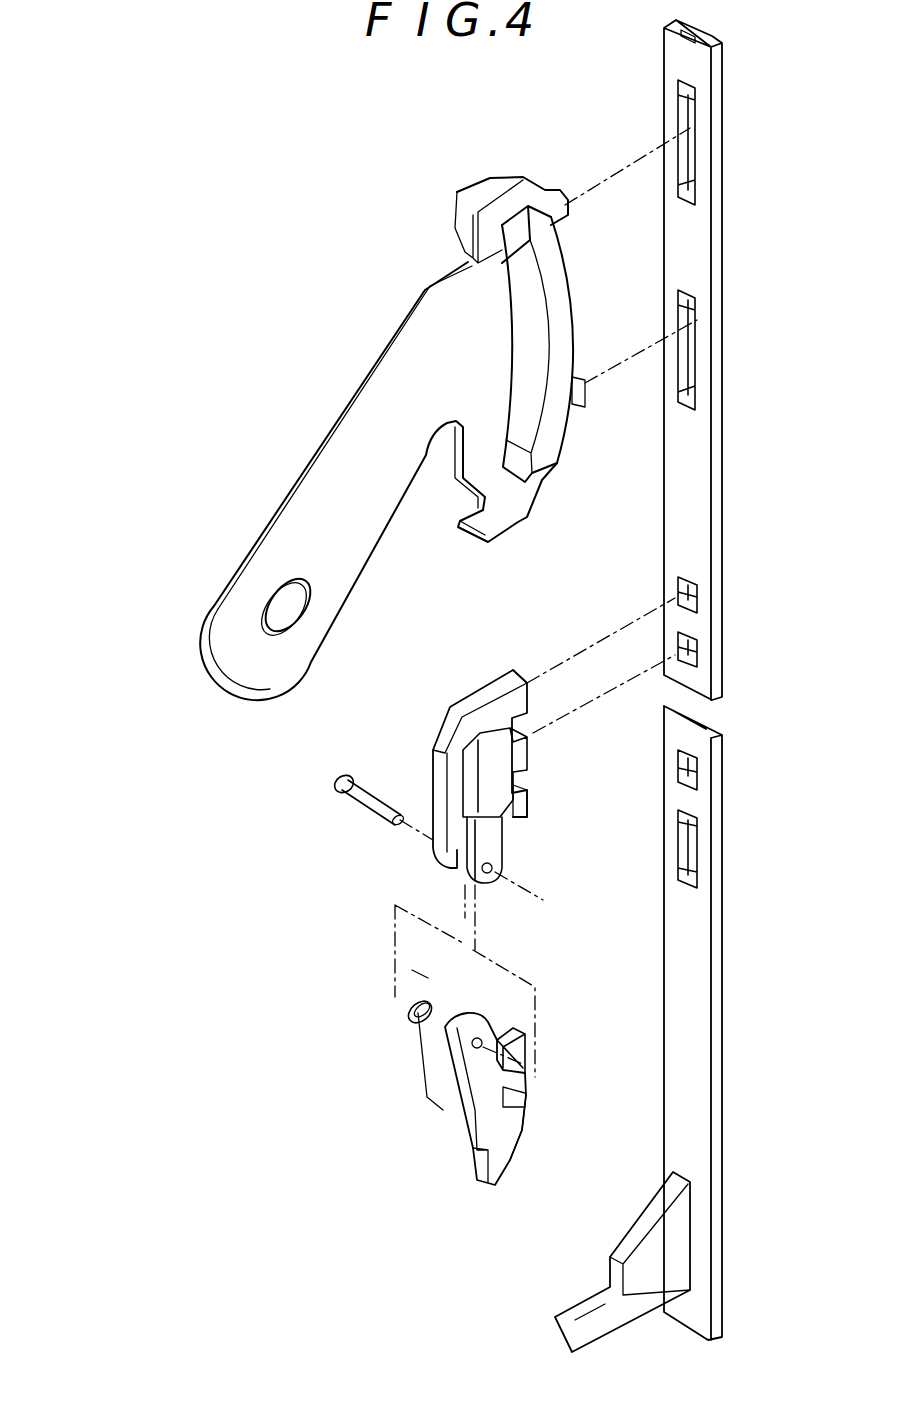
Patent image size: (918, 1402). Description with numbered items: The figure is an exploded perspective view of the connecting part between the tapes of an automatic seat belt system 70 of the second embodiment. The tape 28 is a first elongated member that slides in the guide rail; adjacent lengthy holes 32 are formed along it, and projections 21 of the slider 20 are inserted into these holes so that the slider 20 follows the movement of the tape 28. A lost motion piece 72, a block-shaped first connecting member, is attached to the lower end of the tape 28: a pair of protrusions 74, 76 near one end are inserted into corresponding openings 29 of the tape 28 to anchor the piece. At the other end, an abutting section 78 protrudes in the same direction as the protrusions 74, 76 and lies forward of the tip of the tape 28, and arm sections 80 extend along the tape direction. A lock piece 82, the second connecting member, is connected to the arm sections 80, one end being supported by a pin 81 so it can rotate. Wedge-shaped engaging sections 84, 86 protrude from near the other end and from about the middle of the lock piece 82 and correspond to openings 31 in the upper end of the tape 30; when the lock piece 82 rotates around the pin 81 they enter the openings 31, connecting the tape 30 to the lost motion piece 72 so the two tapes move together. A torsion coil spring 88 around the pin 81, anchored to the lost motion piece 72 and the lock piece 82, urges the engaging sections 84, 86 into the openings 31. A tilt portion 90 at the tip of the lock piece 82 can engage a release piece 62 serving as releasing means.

The slider 20 is at (390, 334).
The projections 21 is at (562, 190).
The tape 28 is at (722, 490).
The openings 29 is at (697, 597).
The tape 30 is at (722, 1070).
The openings 31 is at (697, 770).
The lengthy holes 32 is at (695, 180).
The release piece 62 is at (632, 1228).
The automatic seat belt system 70 is at (137, 582).
The lost motion piece 72 is at (443, 720).
The protrusion 74 is at (533, 697).
The protrusion 76 is at (530, 757).
The abutting section 78 is at (527, 813).
The arm sections 80 is at (505, 868).
The pin 81 is at (372, 817).
The lock piece 82 is at (463, 1113).
The engaging section 84 is at (527, 1033).
The engaging section 86 is at (525, 1093).
The torsion coil spring 88 is at (407, 1017).
The tilt portion 90 is at (522, 1128).